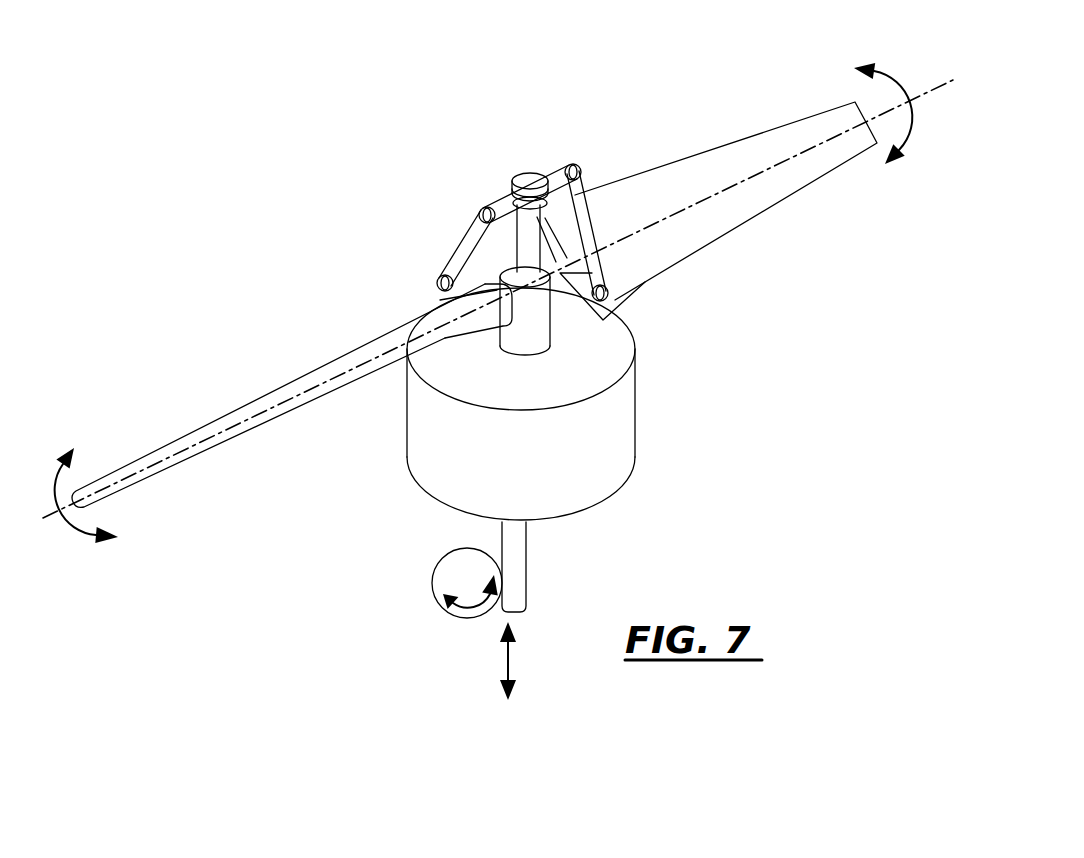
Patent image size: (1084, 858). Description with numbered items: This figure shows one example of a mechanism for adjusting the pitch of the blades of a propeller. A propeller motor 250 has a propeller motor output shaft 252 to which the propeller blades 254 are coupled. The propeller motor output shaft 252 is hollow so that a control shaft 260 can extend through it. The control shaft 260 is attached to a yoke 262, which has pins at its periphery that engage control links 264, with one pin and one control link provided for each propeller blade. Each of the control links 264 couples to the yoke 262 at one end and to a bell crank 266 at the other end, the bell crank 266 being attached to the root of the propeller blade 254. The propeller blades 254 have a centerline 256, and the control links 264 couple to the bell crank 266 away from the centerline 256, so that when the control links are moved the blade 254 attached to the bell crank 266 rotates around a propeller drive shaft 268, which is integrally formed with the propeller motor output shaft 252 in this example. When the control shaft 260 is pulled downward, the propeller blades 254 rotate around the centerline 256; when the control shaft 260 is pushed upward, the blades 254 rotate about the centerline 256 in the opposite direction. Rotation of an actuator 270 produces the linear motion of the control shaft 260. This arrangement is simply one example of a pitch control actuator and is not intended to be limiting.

The propeller motor 250 is at (610, 437).
The propeller motor output shaft 252 is at (530, 342).
The propeller blades 254 is at (320, 392).
The centerline 256 is at (923, 90).
The control shaft 260 is at (523, 237).
The yoke 262 is at (503, 198).
The control links 264 is at (462, 258).
The bell crank 266 is at (583, 270).
The propeller drive shaft 268 is at (560, 263).
The actuator 270 is at (450, 617).